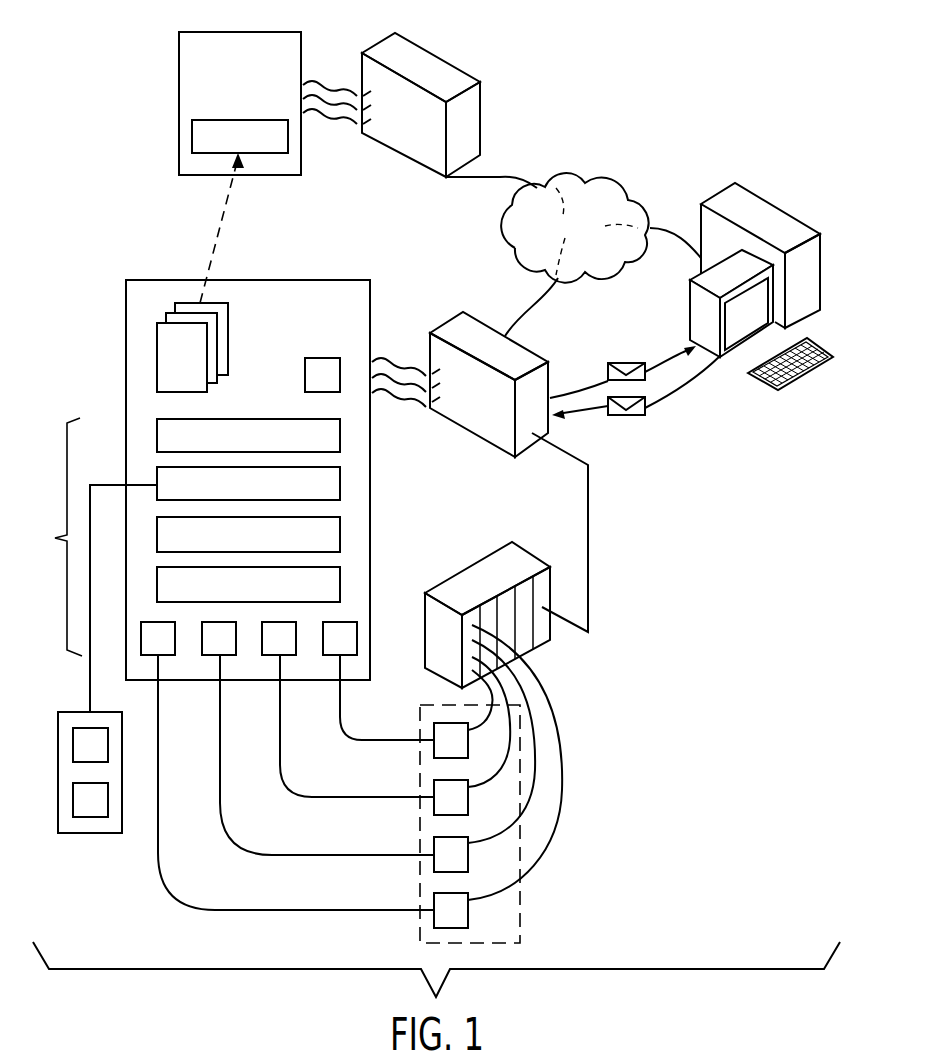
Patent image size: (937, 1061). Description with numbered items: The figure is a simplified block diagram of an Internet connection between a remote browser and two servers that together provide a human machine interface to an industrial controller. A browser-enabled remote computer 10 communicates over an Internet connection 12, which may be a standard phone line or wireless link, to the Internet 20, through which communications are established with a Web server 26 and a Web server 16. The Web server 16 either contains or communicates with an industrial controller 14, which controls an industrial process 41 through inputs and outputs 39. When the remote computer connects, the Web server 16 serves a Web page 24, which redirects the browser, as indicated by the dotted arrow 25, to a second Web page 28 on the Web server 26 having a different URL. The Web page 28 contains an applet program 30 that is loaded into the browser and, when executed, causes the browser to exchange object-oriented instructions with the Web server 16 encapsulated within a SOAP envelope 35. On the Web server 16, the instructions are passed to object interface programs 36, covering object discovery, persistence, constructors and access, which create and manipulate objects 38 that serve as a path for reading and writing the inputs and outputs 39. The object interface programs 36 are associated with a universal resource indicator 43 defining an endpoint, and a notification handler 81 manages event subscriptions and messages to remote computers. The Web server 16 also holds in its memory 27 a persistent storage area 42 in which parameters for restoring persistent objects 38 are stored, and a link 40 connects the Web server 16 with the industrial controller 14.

The remote computer 10 is at (772, 172).
The Internet connection 12 is at (503, 176).
The industrial controller 14 is at (467, 568).
The Web server 16 is at (443, 323).
The Internet 20 is at (578, 176).
The Web page 24 is at (170, 366).
The dotted arrow 25 is at (220, 248).
The Web server 26 is at (423, 63).
The memory 27 is at (370, 298).
The Web page 28 is at (178, 68).
The applet program 30 is at (192, 136).
The SOAP envelope 35 is at (647, 408).
The object interface programs 36 is at (340, 435).
The objects 38 is at (330, 657).
The inputs and outputs 39 is at (434, 784).
The server connection 40 is at (588, 547).
The industrial process 41 is at (530, 914).
The persistent storage area 42 is at (90, 835).
The universal resource indicator 43 is at (93, 565).
The notification handler 81 is at (322, 358).